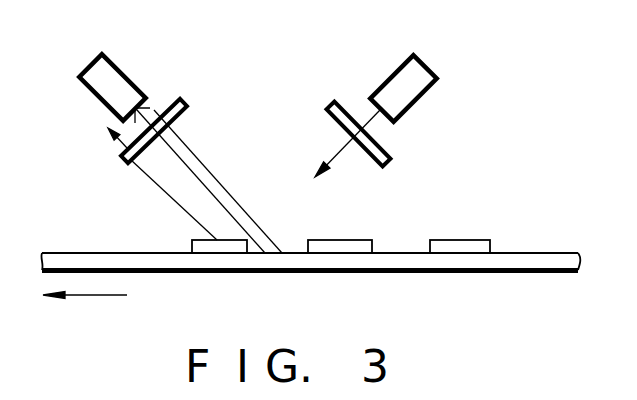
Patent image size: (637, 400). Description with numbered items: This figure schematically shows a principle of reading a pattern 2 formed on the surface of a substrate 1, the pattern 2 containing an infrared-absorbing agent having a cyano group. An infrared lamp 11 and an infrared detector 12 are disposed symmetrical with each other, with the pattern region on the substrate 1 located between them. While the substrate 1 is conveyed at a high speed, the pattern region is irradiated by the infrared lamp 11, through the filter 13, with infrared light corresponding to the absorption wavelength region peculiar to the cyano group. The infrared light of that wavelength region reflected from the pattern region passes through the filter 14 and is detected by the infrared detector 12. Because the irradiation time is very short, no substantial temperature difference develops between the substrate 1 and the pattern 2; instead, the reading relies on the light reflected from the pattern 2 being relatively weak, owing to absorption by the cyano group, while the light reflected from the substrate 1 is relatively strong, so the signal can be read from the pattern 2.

The substrate 1 is at (538, 253).
The pattern 2 is at (183, 247).
The infrared lamp 11 is at (402, 73).
The infrared detector 12 is at (128, 80).
The filter 13 is at (333, 118).
The filter 14 is at (185, 98).